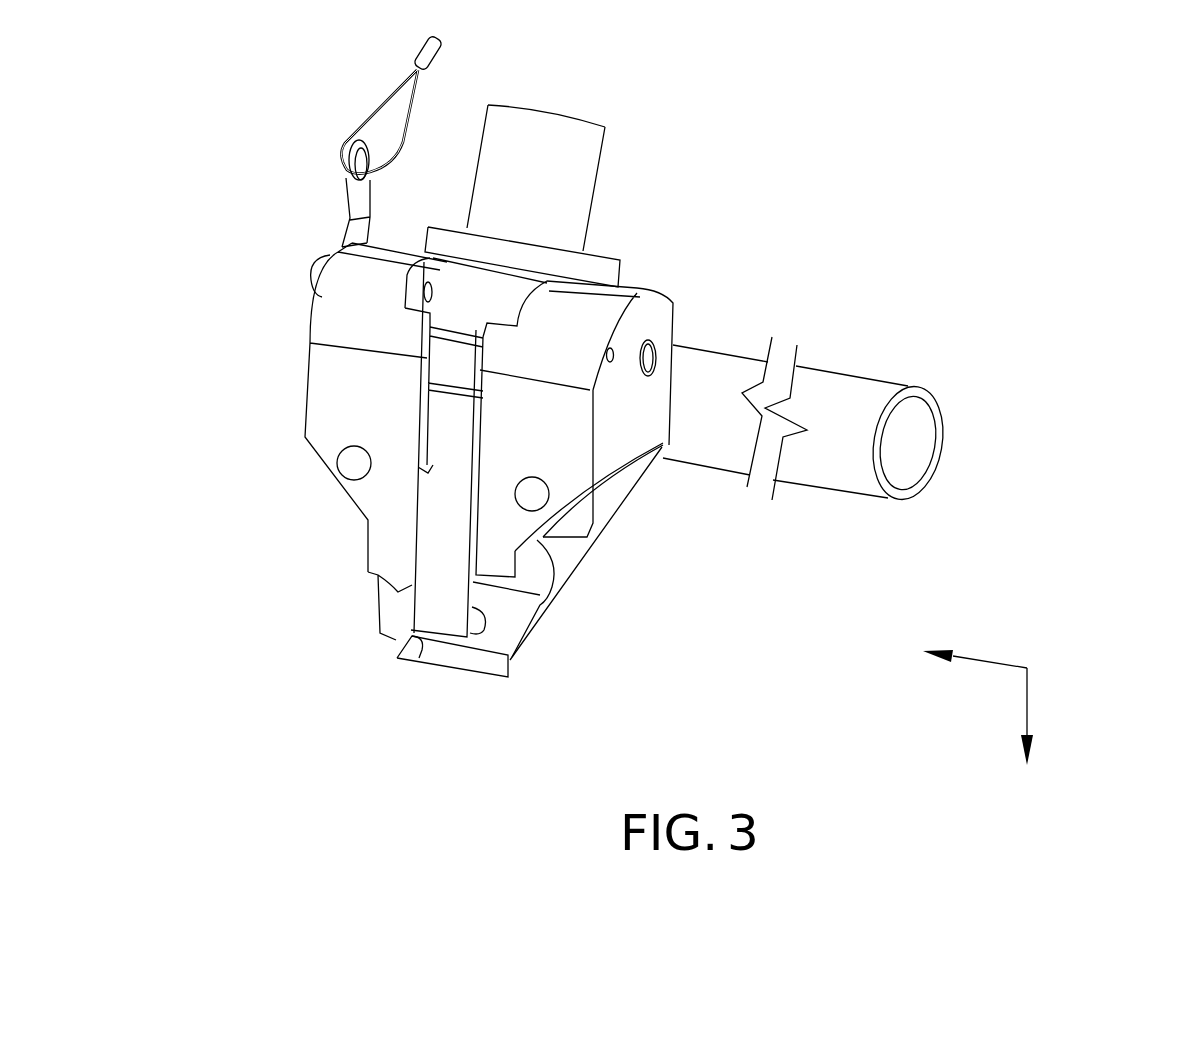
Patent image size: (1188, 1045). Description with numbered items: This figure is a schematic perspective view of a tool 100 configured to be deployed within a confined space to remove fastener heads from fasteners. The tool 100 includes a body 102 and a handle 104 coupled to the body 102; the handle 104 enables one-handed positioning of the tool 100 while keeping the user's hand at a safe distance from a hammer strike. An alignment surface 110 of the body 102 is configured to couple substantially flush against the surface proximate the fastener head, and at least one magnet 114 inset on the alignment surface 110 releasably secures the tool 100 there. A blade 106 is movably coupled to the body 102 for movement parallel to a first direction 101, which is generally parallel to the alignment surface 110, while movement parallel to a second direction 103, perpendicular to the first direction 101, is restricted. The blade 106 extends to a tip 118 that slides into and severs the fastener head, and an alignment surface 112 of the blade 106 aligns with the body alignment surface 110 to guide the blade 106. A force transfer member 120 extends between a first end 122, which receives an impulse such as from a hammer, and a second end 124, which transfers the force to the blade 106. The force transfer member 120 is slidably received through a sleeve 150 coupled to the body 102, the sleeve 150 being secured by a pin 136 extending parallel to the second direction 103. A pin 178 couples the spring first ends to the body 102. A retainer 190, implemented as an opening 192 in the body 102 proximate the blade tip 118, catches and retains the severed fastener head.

The tool 100 is at (925, 118).
The first direction 101 is at (1027, 705).
The second direction 103 is at (972, 658).
The body 102 is at (305, 369).
The handle 104 is at (842, 370).
The blade 106 is at (442, 618).
The alignment surface 110 is at (378, 493).
The alignment surface 112 is at (440, 590).
The magnet 114 is at (353, 462).
The tip 118 is at (423, 638).
The force transfer member 120 is at (602, 163).
The first end 122 is at (630, 107).
The second end 124 is at (396, 466).
The pin 136 is at (652, 360).
The sleeve 150 is at (602, 263).
The pin 178 is at (613, 364).
The retainer 190 is at (500, 632).
The opening 192 is at (521, 598).